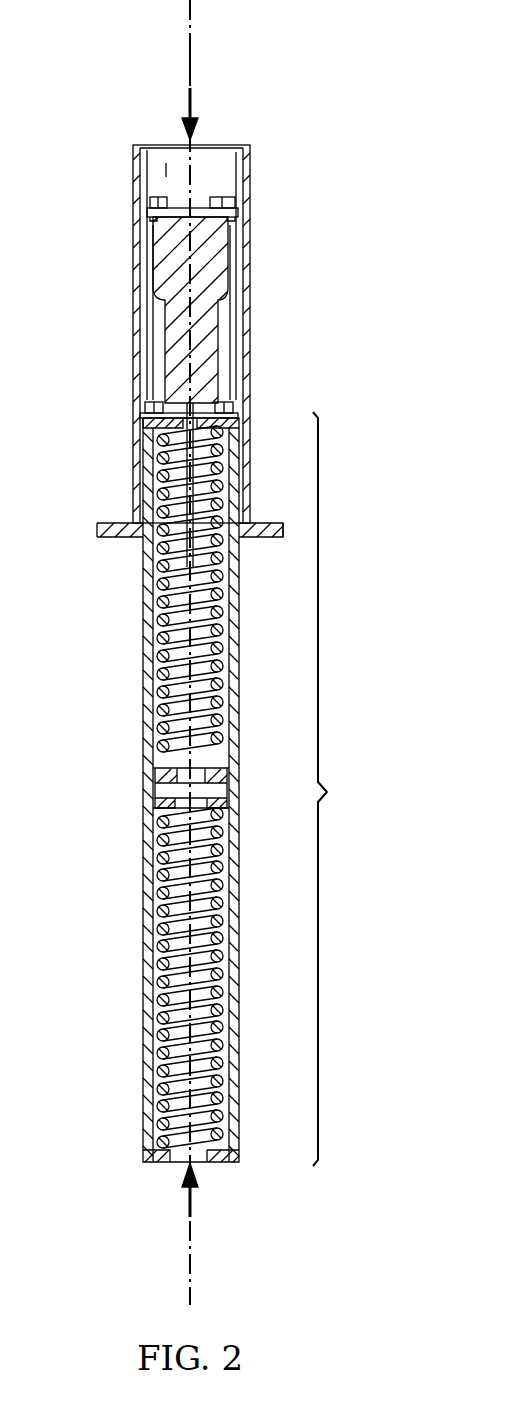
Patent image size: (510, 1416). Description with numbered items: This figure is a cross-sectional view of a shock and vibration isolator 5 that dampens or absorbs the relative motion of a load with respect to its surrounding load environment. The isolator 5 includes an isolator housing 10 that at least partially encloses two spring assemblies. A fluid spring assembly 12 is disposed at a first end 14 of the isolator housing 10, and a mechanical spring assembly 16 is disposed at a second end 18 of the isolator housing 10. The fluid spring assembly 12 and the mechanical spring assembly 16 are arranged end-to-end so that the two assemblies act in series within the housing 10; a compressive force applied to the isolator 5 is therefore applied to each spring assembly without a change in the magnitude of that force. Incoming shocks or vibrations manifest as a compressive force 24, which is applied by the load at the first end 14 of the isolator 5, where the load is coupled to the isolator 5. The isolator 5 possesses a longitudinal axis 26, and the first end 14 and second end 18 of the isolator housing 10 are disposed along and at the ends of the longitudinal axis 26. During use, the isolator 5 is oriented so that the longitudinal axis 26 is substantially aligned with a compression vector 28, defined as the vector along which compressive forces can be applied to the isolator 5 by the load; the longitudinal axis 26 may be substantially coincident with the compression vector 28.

The shock and vibration isolator 5 is at (200, 652).
The isolator housing 10 is at (236, 655).
The fluid spring assembly 12 is at (229, 388).
The first end 14 is at (284, 166).
The mechanical spring assembly 16 is at (336, 789).
The second end 18 is at (98, 1124).
The compressive force 24 is at (193, 103).
The longitudinal axis 26 is at (192, 9).
The compression vector 28 is at (188, 62).